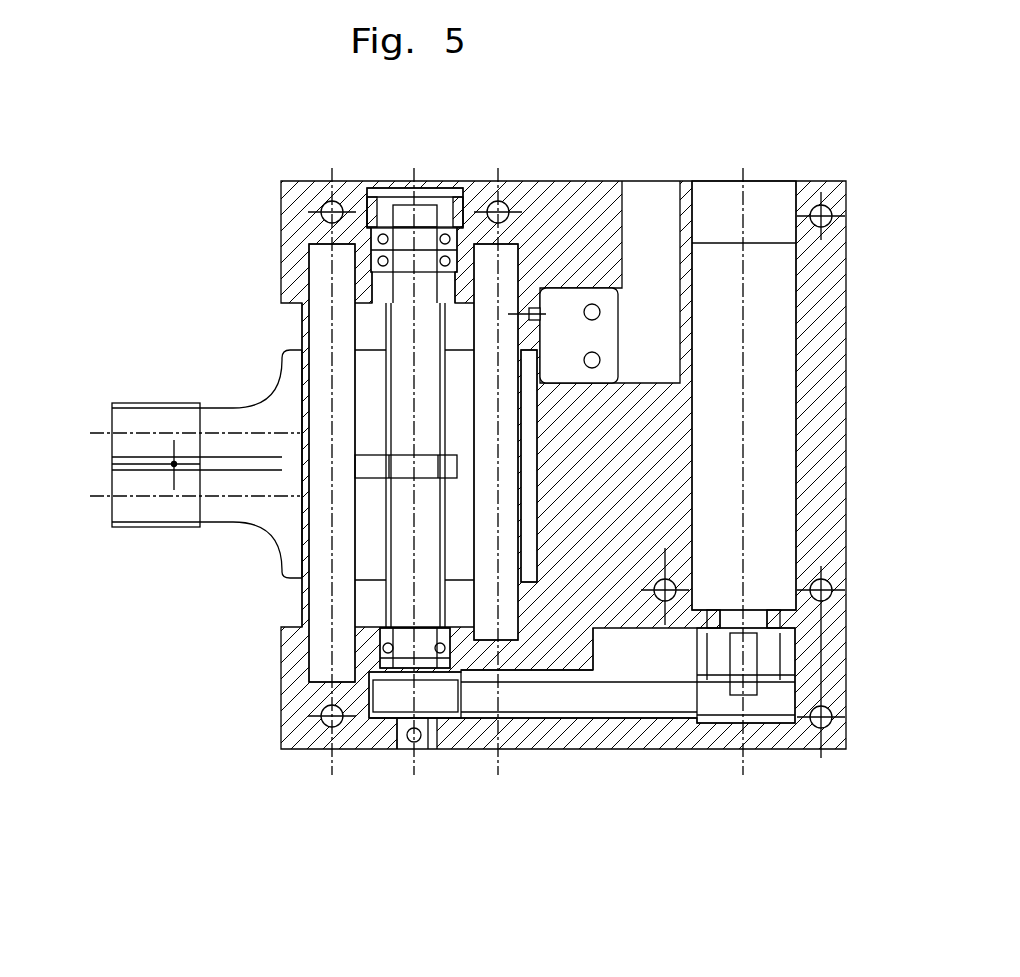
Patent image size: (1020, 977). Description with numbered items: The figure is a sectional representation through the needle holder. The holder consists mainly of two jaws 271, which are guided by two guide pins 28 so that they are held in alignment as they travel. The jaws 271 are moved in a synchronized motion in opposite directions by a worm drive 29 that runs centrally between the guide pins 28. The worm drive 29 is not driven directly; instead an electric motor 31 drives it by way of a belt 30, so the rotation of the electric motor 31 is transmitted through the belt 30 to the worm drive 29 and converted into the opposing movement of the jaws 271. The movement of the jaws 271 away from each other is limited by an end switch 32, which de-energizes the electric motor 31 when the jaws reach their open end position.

The guide pins 28 is at (322, 622).
The worm drive 29 is at (423, 610).
The belt 30 is at (673, 700).
The electric motor 31 is at (767, 367).
The end switch 32 is at (586, 305).
The jaws 271 is at (151, 424).